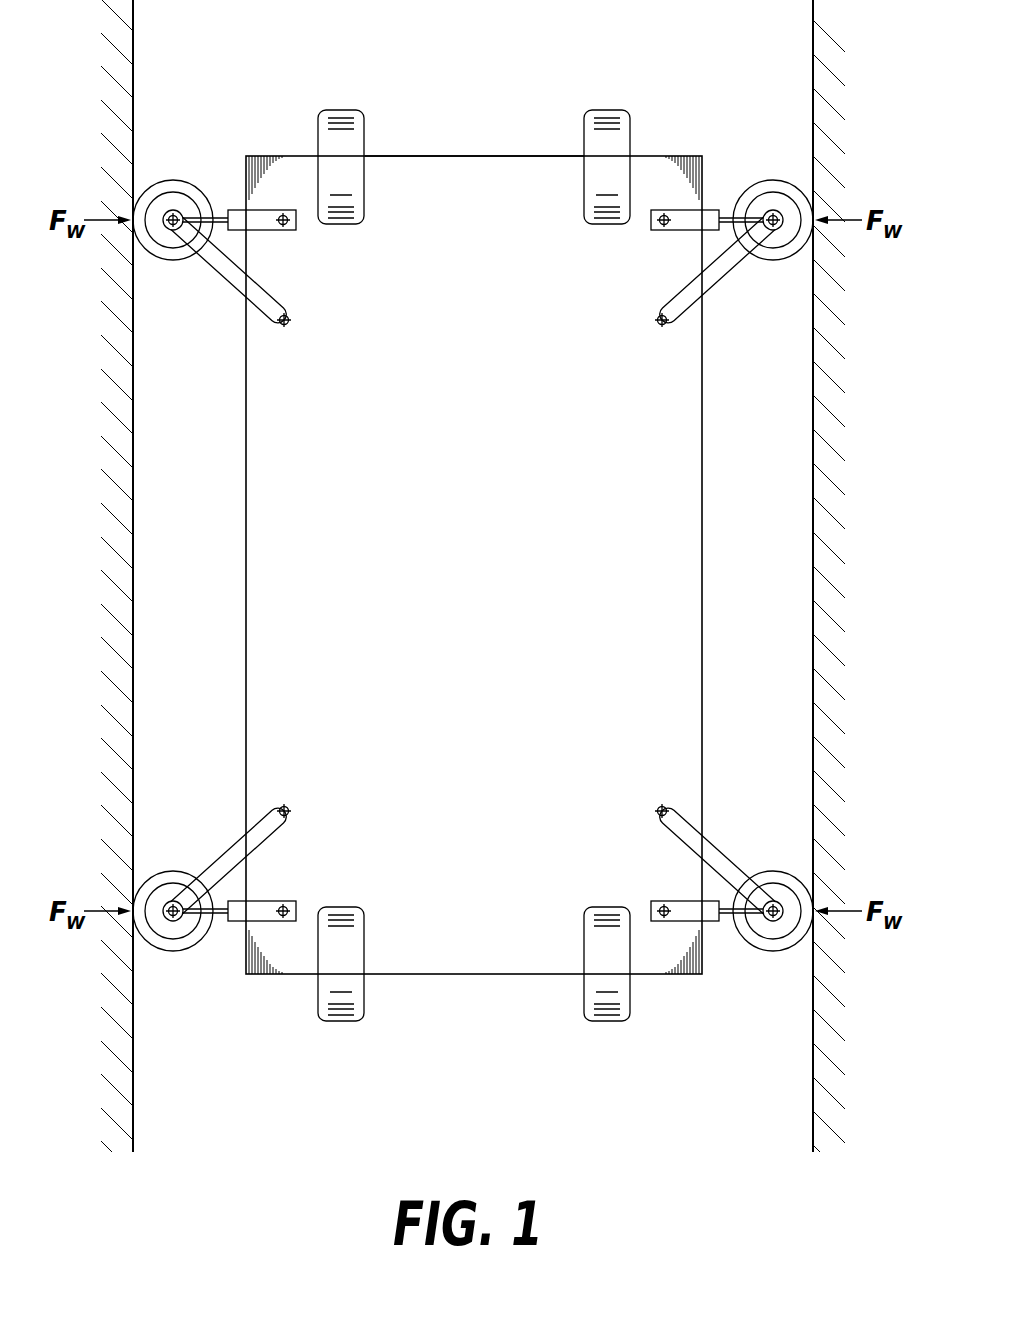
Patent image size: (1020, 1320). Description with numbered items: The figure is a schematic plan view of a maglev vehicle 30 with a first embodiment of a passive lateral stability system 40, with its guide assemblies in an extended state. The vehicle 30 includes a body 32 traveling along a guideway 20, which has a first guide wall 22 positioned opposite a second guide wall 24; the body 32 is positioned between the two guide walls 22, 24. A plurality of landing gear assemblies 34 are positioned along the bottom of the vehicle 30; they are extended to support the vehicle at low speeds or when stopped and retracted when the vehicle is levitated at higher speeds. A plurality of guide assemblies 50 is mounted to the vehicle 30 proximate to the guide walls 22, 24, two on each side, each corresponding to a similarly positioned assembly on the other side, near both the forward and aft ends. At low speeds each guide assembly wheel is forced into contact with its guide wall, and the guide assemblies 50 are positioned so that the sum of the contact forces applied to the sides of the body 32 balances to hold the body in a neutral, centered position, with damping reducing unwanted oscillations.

The guideway 20 is at (170, 100).
The first guide wall 22 is at (133, 43).
The second guide wall 24 is at (813, 22).
The vehicle 30 is at (400, 146).
The body 32 is at (473, 156).
The landing gear assemblies 34 is at (343, 110).
The passive lateral stability system 40 is at (748, 143).
The guide assemblies 50 is at (167, 278).